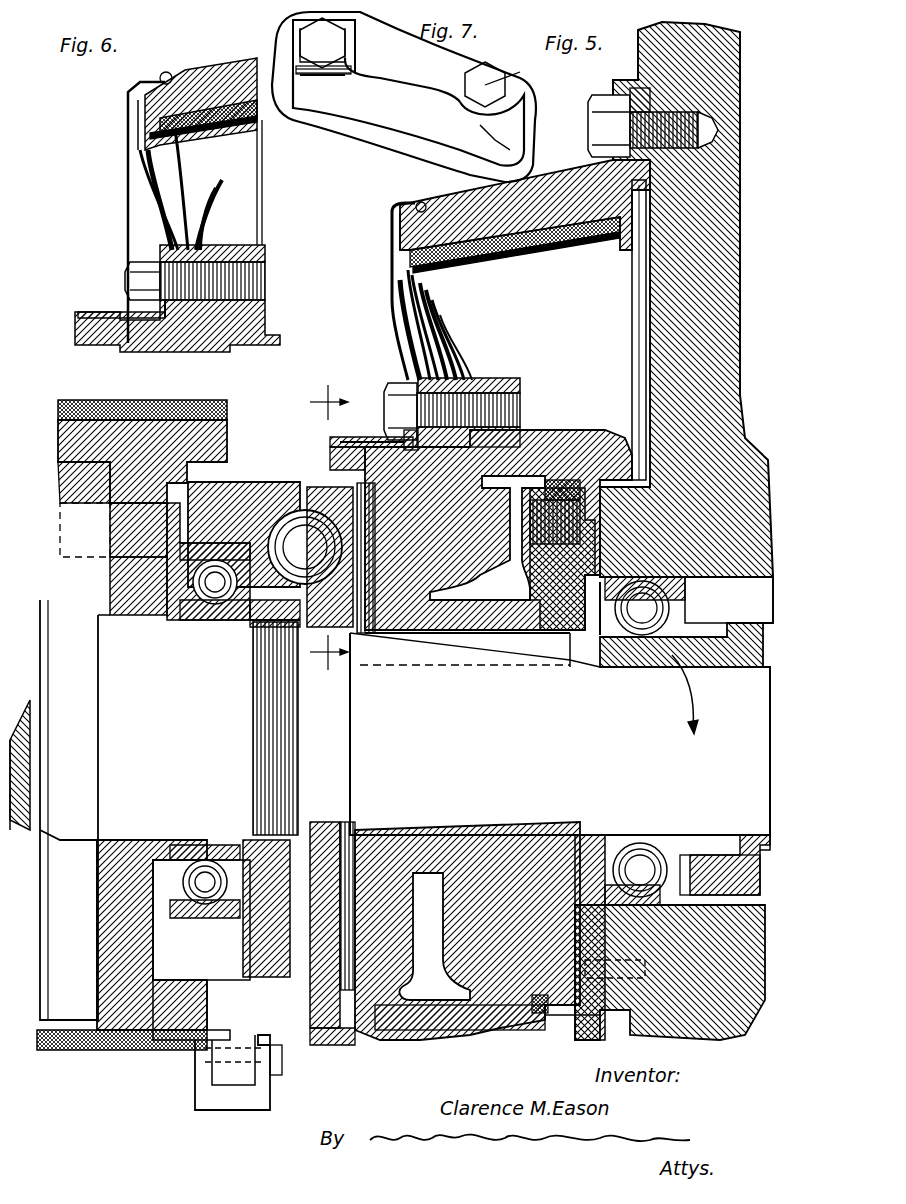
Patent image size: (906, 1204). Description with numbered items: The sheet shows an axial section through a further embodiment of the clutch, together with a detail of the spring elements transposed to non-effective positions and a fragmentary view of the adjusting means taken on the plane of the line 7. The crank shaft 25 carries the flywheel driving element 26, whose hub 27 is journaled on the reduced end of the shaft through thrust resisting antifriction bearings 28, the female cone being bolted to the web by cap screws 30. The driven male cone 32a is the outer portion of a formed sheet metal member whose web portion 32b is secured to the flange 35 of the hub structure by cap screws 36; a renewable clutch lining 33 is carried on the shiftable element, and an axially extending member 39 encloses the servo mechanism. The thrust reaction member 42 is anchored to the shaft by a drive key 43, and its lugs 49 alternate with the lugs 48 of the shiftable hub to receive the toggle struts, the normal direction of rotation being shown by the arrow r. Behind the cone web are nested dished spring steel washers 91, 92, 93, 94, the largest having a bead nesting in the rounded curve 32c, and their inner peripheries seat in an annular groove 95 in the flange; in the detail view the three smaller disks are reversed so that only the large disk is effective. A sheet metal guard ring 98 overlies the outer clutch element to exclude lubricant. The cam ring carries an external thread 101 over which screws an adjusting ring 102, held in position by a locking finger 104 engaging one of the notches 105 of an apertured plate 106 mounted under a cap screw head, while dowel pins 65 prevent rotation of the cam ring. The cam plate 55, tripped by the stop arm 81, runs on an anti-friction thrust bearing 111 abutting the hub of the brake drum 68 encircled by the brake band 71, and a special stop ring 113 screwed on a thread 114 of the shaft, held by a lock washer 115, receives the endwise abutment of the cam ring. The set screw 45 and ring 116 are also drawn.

In FIG. 5, the crank shaft 25 is at (30, 720).
In FIG. 5, the driving element 26 is at (735, 62).
In FIG. 5, the hub portion 27 is at (740, 465).
In FIG. 5, the thrust resisting antifriction bearings 28 is at (660, 612).
In FIG. 5, the cap screws 30 is at (592, 110).
In FIG. 5, the male cone 32a is at (535, 235).
In FIG. 5, the web portion 32b is at (405, 325).
In FIG. 5, the rounded curve 32c is at (395, 272).
In FIG. 5, the clutch lining 33 is at (605, 236).
In FIG. 5, the flange 35 is at (500, 378).
In FIG. 7, the cap screws 36 is at (318, 40).
In FIG. 5, the cap screws 36 is at (400, 400).
In FIG. 5, the axially extending member 39 is at (560, 468).
In FIG. 5, the thrust reaction member 42 is at (548, 610).
In FIG. 5, the drive key 43 is at (518, 650).
In FIG. 5, the set screw 45 is at (613, 1010).
In FIG. 5, the lugs or bosses 48 is at (487, 538).
In FIG. 5, the lugs or bosses 49 is at (470, 915).
In FIG. 5, the cam plate 55 is at (243, 490).
In FIG. 5, the dowel pins 65 is at (398, 640).
In FIG. 5, the brake drum 68 is at (80, 445).
In FIG. 5, the section line 7 is at (329, 534).
In FIG. 5, the brake band 71 is at (72, 400).
In FIG. 5, the stop arm 81 is at (228, 1032).
In FIG. 6, the spring steel washer 91 is at (160, 172).
In FIG. 5, the spring steel washer 91 is at (420, 300).
In FIG. 6, the spring steel washer 92 is at (205, 200).
In FIG. 5, the spring steel washer 92 is at (436, 312).
In FIG. 6, the spring steel washer 93 is at (215, 183).
In FIG. 5, the spring steel washer 93 is at (446, 330).
In FIG. 6, the spring steel washer 94 is at (196, 175).
In FIG. 5, the spring steel washer 94 is at (454, 348).
In FIG. 5, the annular groove 95 is at (468, 362).
In FIG. 5, the guard ring 98 is at (390, 225).
In FIG. 5, the external thread 101 is at (300, 975).
In FIG. 5, the adjusting ring 102 is at (330, 450).
In FIG. 7, the locking finger 104 is at (312, 76).
In FIG. 5, the locking finger 104 is at (380, 438).
In FIG. 7, the notches 105 is at (330, 78).
In FIG. 5, the notches 105 is at (350, 440).
In FIG. 7, the apertured plate 106 is at (355, 28).
In FIG. 5, the apertured plate 106 is at (420, 378).
In FIG. 5, the anti-friction thrust bearing 111 is at (205, 600).
In FIG. 5, the stop ring 113 is at (262, 635).
In FIG. 5, the thread 114 is at (540, 1010).
In FIG. 5, the lock washer 115 is at (243, 625).
In FIG. 5, the ring 116 is at (560, 1015).
In FIG. 5, the direction of rotation r is at (690, 706).